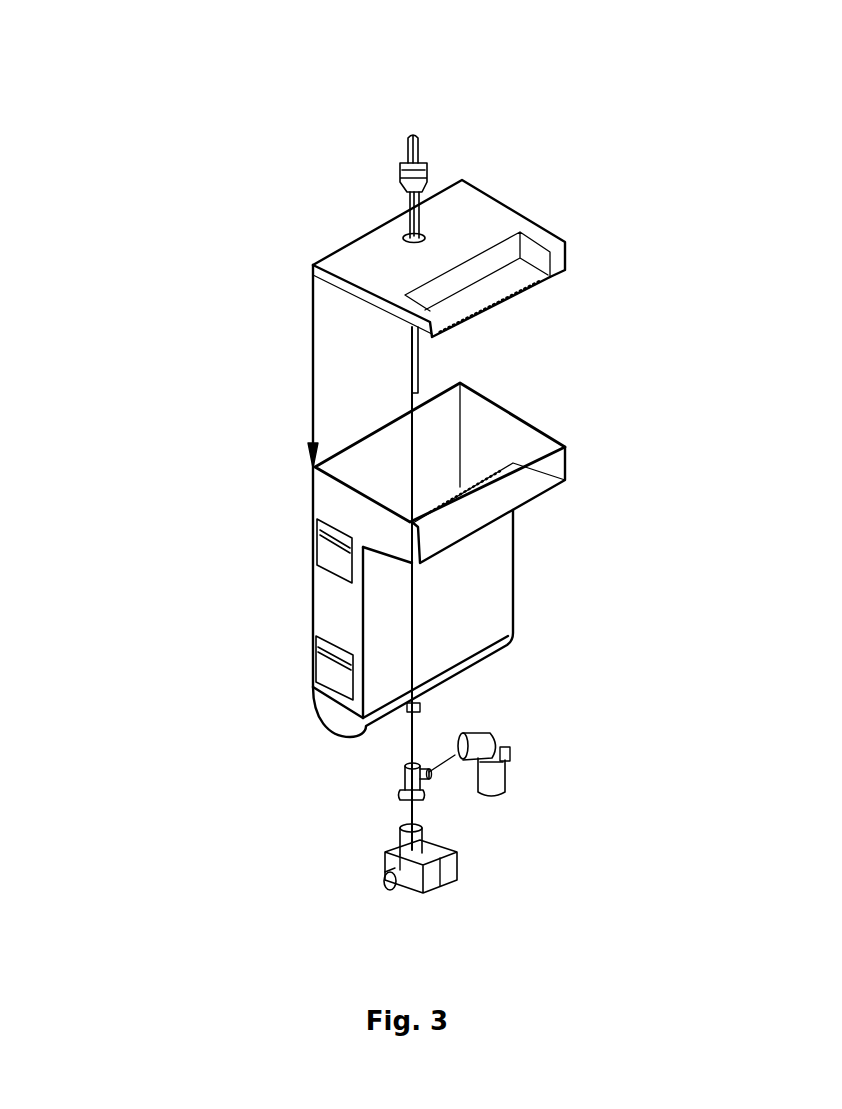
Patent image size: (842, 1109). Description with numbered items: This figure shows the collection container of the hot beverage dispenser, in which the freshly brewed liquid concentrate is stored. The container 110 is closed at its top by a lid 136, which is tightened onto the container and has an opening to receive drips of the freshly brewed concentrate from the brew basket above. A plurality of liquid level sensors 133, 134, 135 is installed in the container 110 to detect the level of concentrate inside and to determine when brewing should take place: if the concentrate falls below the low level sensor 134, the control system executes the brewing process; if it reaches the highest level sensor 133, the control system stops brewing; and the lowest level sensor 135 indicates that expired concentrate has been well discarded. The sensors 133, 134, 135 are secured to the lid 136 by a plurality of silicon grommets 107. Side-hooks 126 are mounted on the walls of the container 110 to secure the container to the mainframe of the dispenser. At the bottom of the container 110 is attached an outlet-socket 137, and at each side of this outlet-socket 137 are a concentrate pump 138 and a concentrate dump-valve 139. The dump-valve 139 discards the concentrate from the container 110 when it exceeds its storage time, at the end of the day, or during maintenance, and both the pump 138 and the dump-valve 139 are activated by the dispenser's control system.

The silicon grommet 107 is at (400, 183).
The container 110 is at (565, 479).
The side-hooks 126 is at (332, 556).
The highest level sensor 133 is at (407, 143).
The low level sensor 134 is at (425, 357).
The lowest level sensor 135 is at (418, 378).
The lid 136 is at (567, 263).
The outlet-socket 137 is at (404, 764).
The concentrate pump 138 is at (508, 750).
The concentrate dump-valve 139 is at (455, 854).